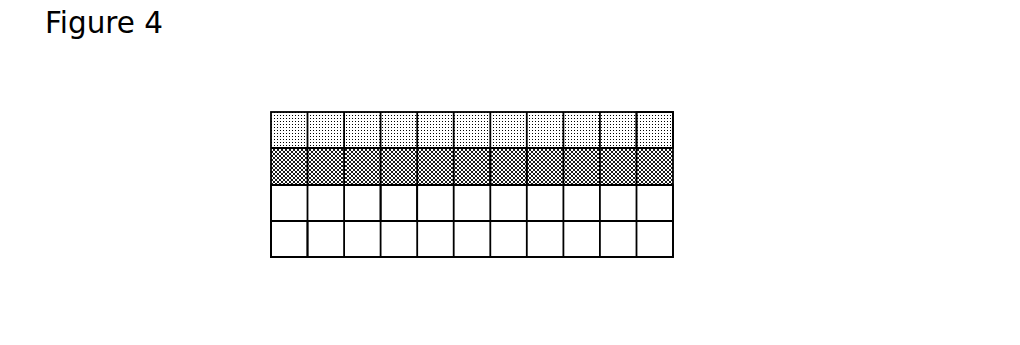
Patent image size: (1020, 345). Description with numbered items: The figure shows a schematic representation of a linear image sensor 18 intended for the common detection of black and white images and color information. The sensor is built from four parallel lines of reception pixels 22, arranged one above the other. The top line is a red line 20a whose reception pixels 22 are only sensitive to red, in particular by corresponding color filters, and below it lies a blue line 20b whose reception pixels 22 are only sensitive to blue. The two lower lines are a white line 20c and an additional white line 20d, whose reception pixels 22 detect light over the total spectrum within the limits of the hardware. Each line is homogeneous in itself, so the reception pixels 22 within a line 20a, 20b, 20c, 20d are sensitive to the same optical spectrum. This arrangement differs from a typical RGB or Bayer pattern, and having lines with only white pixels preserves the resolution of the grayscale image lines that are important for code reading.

The linear image sensor 18 is at (547, 189).
The red line 20a is at (710, 138).
The blue line 20b is at (710, 175).
The white line 20c is at (710, 212).
The additional white line 20d is at (710, 247).
The reception pixel 22 is at (660, 133).